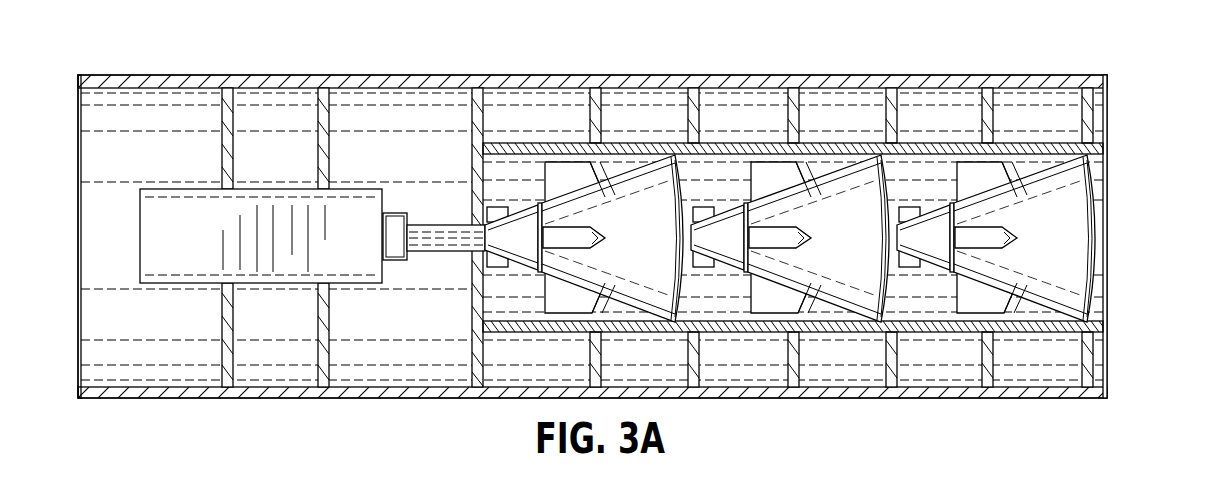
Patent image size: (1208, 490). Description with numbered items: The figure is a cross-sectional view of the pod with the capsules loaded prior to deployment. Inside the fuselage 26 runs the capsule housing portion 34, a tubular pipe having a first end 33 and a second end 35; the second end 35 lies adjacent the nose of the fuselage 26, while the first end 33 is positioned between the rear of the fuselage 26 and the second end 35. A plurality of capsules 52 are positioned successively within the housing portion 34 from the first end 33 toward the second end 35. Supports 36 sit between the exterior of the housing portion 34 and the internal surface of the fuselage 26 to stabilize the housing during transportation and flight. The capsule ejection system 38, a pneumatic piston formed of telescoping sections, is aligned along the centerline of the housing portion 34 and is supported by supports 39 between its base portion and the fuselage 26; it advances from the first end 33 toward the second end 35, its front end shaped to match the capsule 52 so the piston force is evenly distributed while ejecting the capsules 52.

The fuselage 26 is at (935, 397).
The first end 33 is at (486, 143).
The capsule housing portion 34 is at (828, 333).
The second end 35 is at (1108, 330).
The supports 36 is at (993, 372).
The capsule ejection system 38 is at (138, 237).
The supports 39 is at (322, 105).
The capsules 52 is at (1038, 170).